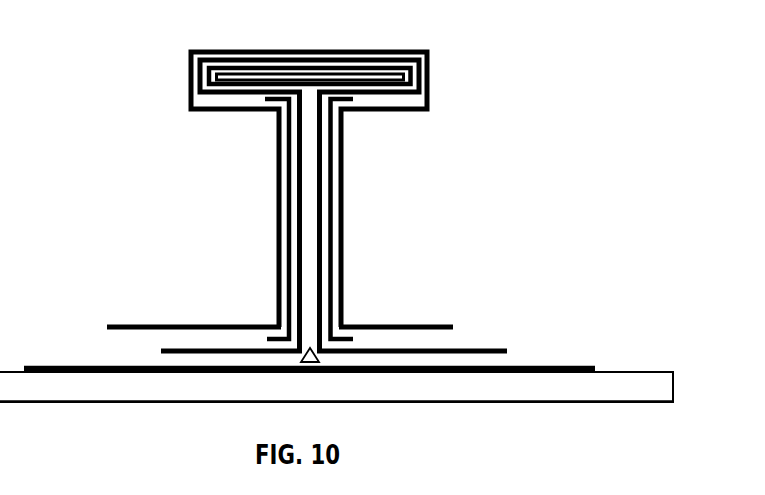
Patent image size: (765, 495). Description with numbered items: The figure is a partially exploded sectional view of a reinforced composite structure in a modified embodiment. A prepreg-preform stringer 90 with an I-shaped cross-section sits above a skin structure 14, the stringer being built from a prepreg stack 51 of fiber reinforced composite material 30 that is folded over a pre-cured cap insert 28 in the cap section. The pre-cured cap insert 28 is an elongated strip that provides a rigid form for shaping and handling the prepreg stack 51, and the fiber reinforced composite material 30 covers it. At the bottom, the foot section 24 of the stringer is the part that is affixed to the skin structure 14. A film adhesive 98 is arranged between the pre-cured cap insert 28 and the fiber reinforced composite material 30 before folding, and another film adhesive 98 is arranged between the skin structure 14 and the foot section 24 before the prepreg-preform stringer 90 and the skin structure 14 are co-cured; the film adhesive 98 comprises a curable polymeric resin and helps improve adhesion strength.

The skin structure 14 is at (655, 385).
The foot section 24 is at (130, 323).
The pre-cured cap insert 28 is at (352, 73).
The fiber reinforced composite material 30 is at (217, 50).
The prepreg stack 51 is at (272, 62).
The prepreg-preform stringer 90 is at (190, 80).
The film adhesive 98 is at (412, 80).